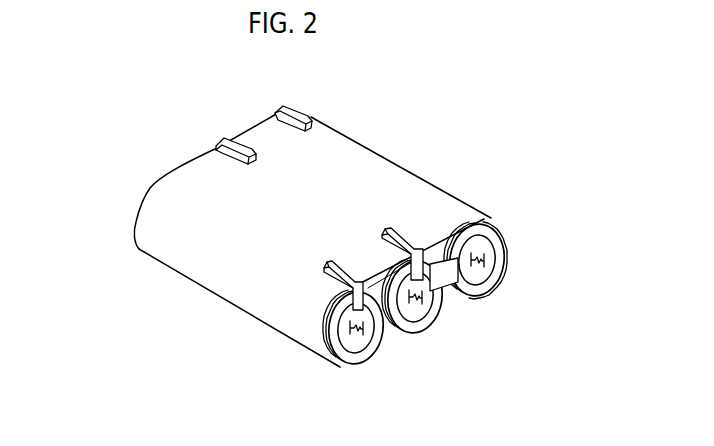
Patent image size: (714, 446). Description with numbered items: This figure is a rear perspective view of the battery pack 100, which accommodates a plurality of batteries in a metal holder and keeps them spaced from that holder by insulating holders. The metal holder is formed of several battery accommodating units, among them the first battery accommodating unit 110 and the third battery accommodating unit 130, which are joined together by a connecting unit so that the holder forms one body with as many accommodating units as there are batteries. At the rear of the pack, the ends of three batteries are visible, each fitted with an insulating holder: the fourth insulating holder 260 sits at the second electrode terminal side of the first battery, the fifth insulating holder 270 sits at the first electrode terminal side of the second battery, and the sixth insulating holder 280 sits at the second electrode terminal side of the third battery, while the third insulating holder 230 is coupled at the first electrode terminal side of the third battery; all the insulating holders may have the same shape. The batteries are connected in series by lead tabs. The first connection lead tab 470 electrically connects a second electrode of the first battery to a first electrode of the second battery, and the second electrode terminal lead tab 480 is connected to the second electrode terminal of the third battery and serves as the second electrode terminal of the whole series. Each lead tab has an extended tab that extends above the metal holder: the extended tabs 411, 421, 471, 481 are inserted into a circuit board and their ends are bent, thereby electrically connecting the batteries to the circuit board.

The battery pack 100 is at (384, 131).
The first battery accommodating unit 110 is at (410, 171).
The third battery accommodating unit 130 is at (248, 311).
The third insulating holder 230 is at (135, 216).
The fourth insulating holder 260 is at (455, 299).
The fifth insulating holder 270 is at (397, 333).
The sixth insulating holder 280 is at (340, 363).
The extended tab 411 is at (301, 114).
The extended tab 421 is at (240, 145).
The first connection lead tab 470 is at (491, 265).
The extended tab 471 is at (400, 228).
The second electrode terminal lead tab 480 is at (350, 354).
The extended tab 481 is at (336, 267).